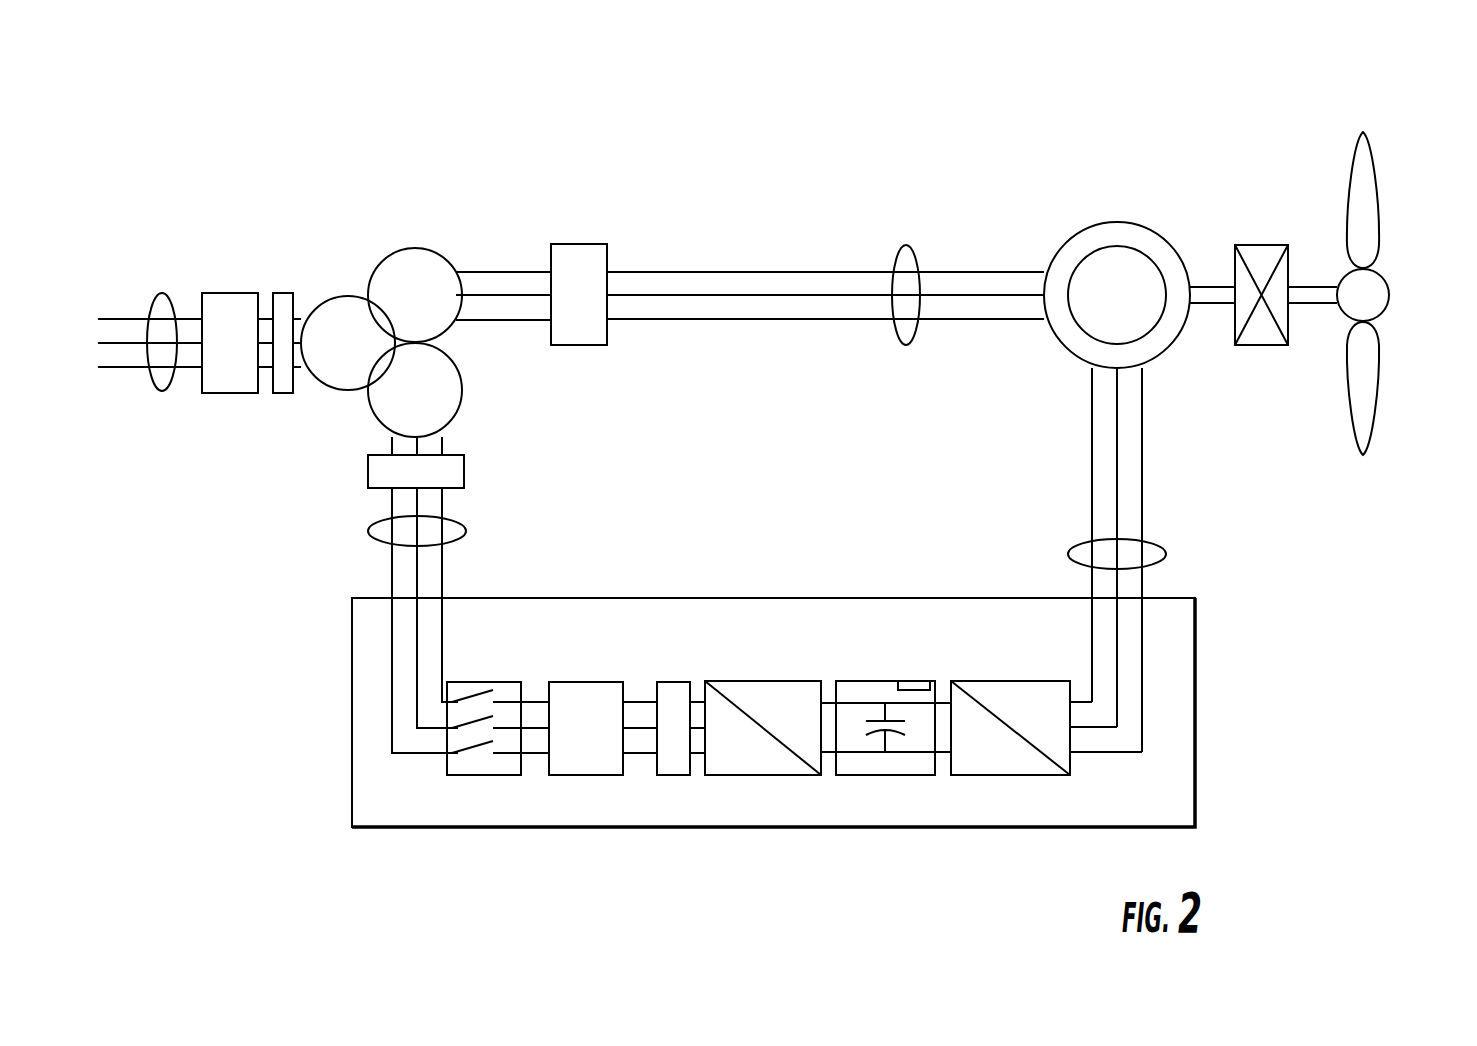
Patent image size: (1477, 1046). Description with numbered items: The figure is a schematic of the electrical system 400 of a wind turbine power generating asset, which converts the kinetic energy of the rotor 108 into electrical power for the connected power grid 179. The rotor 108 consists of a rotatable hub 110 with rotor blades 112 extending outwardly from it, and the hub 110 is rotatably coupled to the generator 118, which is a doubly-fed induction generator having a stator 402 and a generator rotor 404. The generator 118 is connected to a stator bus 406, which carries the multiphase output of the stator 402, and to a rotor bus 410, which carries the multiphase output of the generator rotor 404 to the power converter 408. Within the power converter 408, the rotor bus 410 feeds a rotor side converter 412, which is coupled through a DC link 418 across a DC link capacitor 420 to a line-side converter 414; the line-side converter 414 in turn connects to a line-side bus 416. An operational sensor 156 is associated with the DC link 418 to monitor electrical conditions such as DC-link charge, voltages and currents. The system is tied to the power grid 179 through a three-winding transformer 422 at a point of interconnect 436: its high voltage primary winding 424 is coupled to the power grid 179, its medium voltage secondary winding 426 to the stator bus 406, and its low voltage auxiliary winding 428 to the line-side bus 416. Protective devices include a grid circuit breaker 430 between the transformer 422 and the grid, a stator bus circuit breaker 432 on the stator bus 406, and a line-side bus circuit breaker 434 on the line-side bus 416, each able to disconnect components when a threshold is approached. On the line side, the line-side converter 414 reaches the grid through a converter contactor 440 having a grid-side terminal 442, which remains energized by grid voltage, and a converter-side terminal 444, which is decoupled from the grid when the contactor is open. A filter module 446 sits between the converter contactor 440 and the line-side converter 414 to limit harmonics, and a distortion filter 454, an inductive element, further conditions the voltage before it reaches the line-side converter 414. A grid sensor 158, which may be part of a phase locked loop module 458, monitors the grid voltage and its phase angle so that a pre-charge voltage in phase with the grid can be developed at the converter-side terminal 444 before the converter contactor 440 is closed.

The electrical system 400 is at (744, 124).
The rotor 108 is at (1330, 274).
The hub 110 is at (1390, 300).
The rotor blade 112 is at (1378, 228).
The generator 118 is at (1135, 286).
The stator 402 is at (1178, 250).
The generator rotor 404 is at (1157, 327).
The stator bus 406 is at (906, 246).
The power converter 408 is at (1195, 692).
The rotor bus 410 is at (1166, 554).
The rotor side converter 412 is at (1003, 776).
The line-side converter 414 is at (775, 776).
The line-side bus 416 is at (466, 531).
The DC link 418 is at (886, 720).
The DC link capacitor 420 is at (893, 733).
The operational sensor 156 is at (912, 681).
The transformer 422 is at (421, 279).
The primary winding 424 is at (333, 305).
The secondary winding 426 is at (415, 248).
The auxiliary winding 428 is at (462, 375).
The grid circuit breaker 430 is at (232, 293).
The stator bus circuit breaker 432 is at (571, 244).
The line-side bus circuit breaker 434 is at (464, 470).
The point of interconnect 436 is at (184, 374).
The converter contactor 440 is at (497, 750).
The grid-side terminal 442 is at (452, 700).
The converter-side terminal 444 is at (503, 700).
The filter module 446 is at (590, 688).
The distortion filter 454 is at (672, 688).
The grid sensor 158 is at (283, 393).
The phase locked loop module 458 is at (283, 393).
The power grid 179 is at (160, 296).